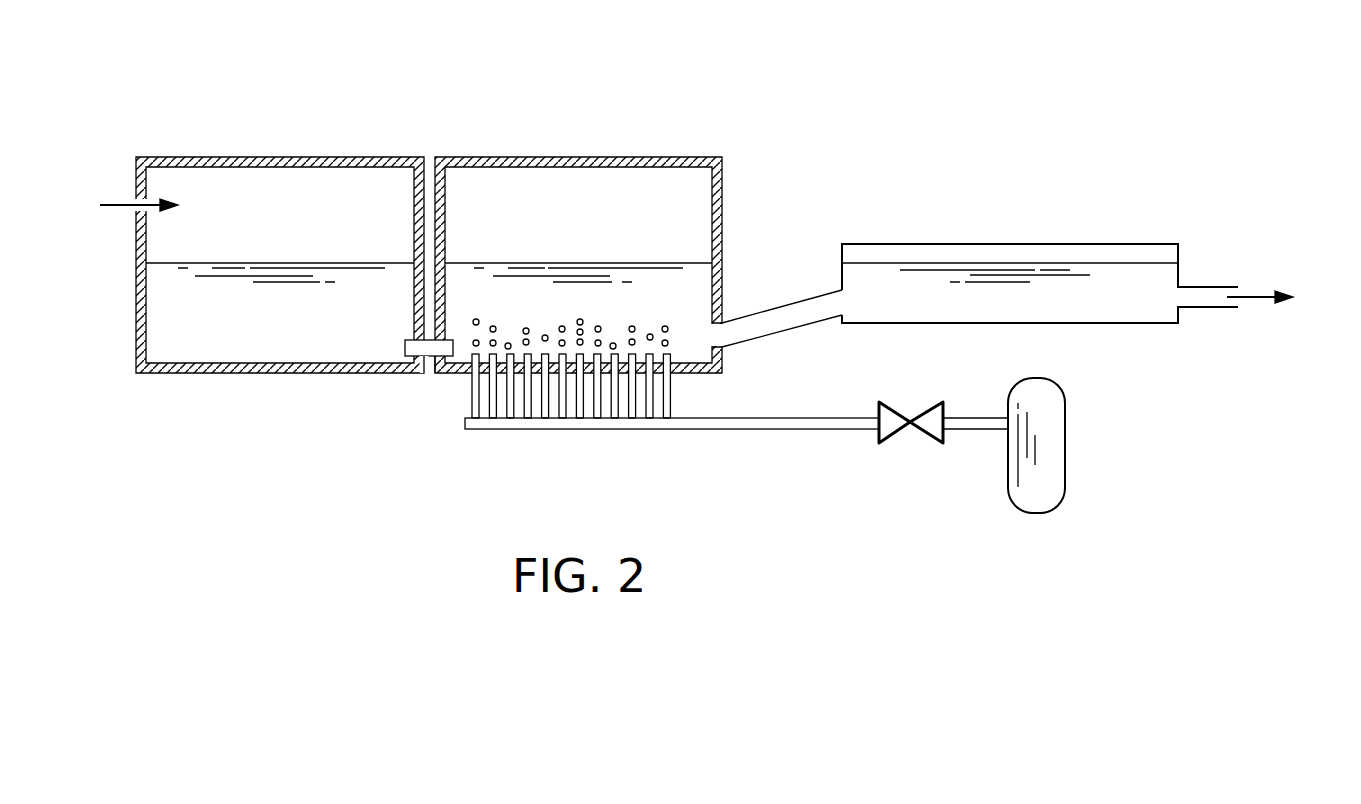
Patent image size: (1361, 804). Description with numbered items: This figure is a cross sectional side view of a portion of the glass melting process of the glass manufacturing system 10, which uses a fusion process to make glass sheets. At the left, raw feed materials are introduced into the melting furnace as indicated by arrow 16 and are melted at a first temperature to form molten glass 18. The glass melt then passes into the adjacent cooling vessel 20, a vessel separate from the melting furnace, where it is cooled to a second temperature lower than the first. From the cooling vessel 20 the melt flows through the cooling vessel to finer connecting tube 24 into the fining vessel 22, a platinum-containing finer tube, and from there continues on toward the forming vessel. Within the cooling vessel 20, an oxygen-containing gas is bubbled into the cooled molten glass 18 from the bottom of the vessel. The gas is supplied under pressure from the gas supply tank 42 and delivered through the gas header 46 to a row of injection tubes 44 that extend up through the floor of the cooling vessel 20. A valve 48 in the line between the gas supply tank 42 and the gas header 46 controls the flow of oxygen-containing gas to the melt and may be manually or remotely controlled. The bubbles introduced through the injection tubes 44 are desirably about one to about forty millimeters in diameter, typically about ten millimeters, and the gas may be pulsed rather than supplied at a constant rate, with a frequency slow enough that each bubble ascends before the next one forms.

The glass manufacturing system 10 is at (279, 138).
The arrow 16 is at (112, 205).
The molten glass 18 is at (378, 312).
The cooling vessel 20 is at (572, 138).
The fining vessel 22 is at (972, 228).
The cooling vessel to finer connecting tube 24 is at (818, 290).
The gas supply tank 42 is at (1065, 452).
The injection tubes 44 is at (468, 405).
The gas header 46 is at (806, 430).
The valve 48 is at (884, 442).